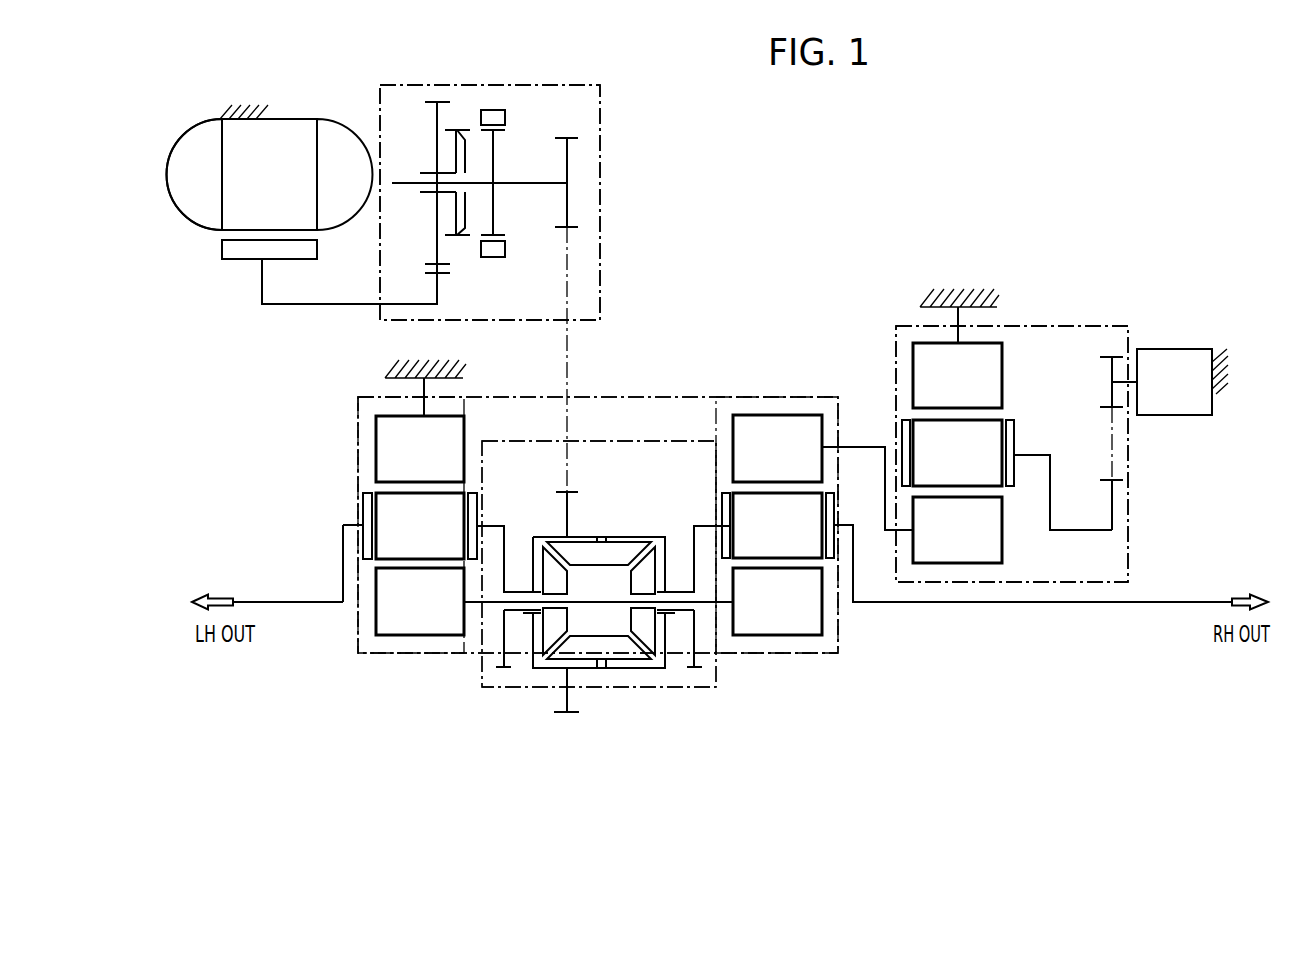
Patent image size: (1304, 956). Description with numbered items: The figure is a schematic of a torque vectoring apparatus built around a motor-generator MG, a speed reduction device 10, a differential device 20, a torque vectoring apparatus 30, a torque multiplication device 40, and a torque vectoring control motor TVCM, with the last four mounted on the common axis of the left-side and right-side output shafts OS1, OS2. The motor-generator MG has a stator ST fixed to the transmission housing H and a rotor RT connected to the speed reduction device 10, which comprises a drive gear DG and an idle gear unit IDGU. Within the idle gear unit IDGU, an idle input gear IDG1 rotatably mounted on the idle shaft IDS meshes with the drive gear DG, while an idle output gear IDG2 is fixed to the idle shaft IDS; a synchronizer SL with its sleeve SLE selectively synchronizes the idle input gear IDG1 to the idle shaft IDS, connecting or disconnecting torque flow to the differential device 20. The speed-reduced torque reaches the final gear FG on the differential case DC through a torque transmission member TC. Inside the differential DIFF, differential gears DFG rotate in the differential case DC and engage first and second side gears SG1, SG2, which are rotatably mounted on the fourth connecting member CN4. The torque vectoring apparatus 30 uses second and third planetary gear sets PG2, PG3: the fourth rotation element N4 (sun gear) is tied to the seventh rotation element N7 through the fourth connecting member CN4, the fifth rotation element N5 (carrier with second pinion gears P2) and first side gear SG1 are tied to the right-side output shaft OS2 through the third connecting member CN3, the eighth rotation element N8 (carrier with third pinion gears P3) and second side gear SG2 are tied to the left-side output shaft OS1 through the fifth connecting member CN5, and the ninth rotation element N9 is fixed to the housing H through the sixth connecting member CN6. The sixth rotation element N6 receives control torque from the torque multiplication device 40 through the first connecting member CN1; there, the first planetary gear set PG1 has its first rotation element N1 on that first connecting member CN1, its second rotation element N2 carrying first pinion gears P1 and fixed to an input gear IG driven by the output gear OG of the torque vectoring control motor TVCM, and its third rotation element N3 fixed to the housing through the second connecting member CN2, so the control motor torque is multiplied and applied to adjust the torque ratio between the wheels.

The motor-generator MG is at (288, 107).
The stator ST is at (195, 137).
The rotor RT is at (222, 249).
The transmission housing H is at (239, 104).
The speed reduction device 10 is at (626, 108).
The idle gear unit IDGU is at (539, 104).
The idle input gear IDG1 is at (437, 115).
The idle output gear IDG2 is at (568, 158).
The idle shaft IDS is at (527, 181).
The sleeve SLE is at (491, 107).
The synchronizer SL is at (515, 87).
The drive gear DG is at (440, 288).
The torque transmission member TC is at (568, 357).
The torque vectoring apparatus 30 is at (676, 381).
The differential device 20 is at (500, 700).
The torque multiplication device 40 is at (1063, 597).
The first planetary gear set PG1 is at (955, 580).
The second planetary gear set PG2 is at (800, 650).
The third planetary gear set PG3 is at (411, 650).
The first rotation element N1 is at (957, 530).
The second rotation element N2 is at (1013, 432).
The third rotation element N3 is at (957, 375).
The fourth rotation element N4 is at (777, 601).
The fifth rotation element N5 is at (719, 497).
The sixth rotation element N6 is at (777, 448).
The seventh rotation element N7 is at (420, 601).
The eighth rotation element N8 is at (362, 502).
The ninth rotation element N9 is at (420, 449).
The first pinion gears P1 is at (958, 453).
The second pinion gears P2 is at (778, 525).
The third pinion gears P3 is at (420, 526).
The first connecting member CN1 is at (862, 446).
The second connecting member CN2 is at (960, 318).
The third connecting member CN3 is at (690, 531).
The fourth connecting member CN4 is at (705, 603).
The fifth connecting member CN5 is at (492, 524).
The sixth connecting member CN6 is at (421, 391).
The differential DIFF is at (610, 628).
The differential case DC is at (585, 670).
The differential gears DFG is at (608, 557).
The first side gear SG1 is at (650, 636).
The second side gear SG2 is at (543, 637).
The final gear FG is at (565, 512).
The left-side output shaft OS1 is at (287, 600).
The right-side output shaft OS2 is at (1175, 600).
The output gear OG is at (1112, 371).
The input gear IG is at (1113, 507).
The torque vectoring control motor TVCM is at (1176, 348).